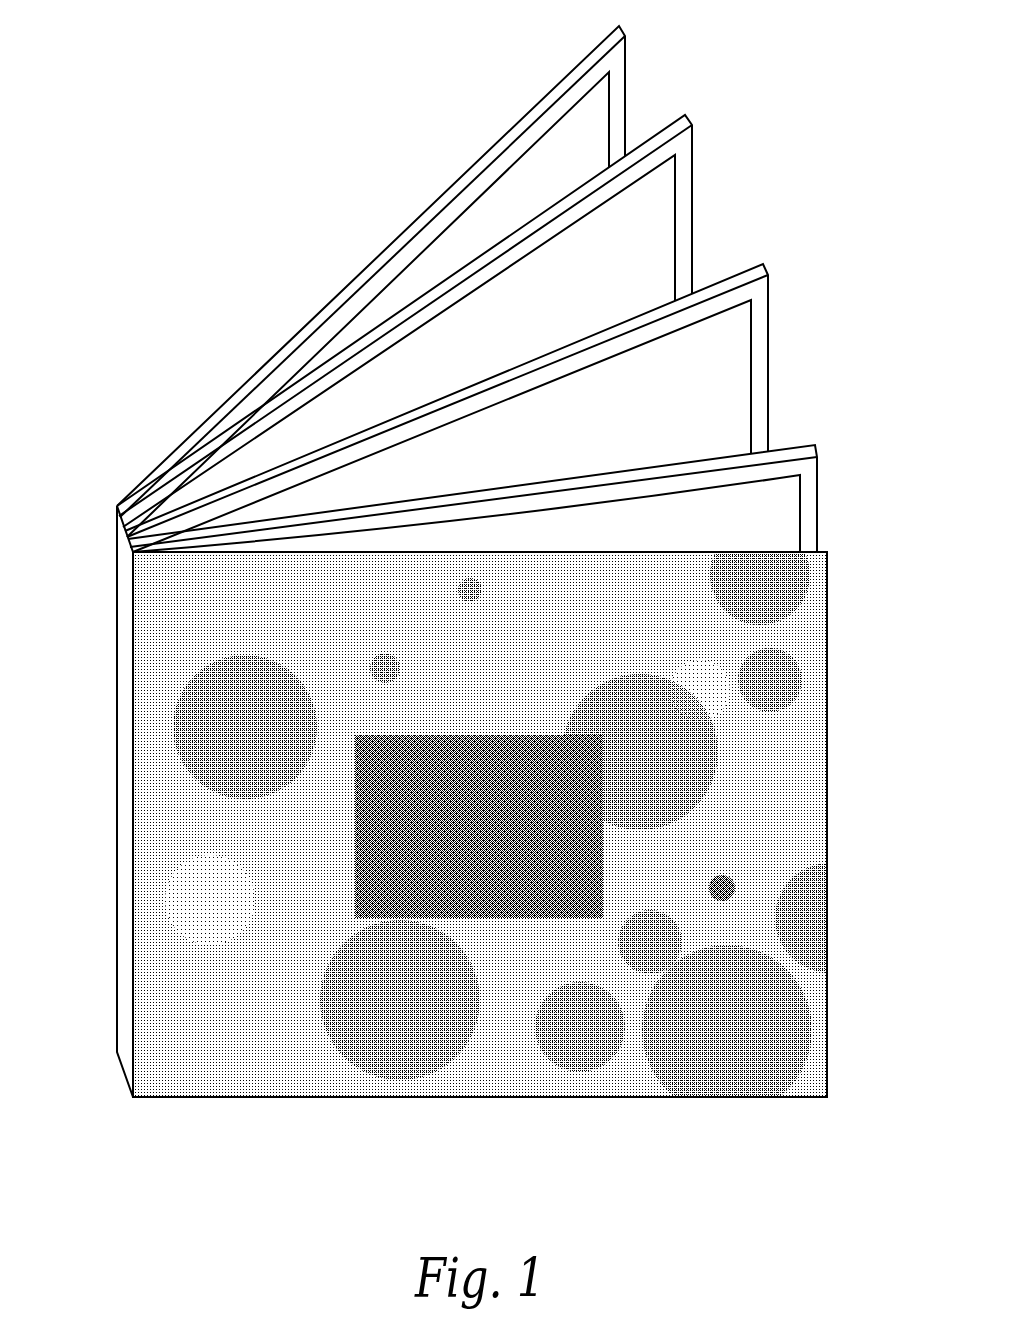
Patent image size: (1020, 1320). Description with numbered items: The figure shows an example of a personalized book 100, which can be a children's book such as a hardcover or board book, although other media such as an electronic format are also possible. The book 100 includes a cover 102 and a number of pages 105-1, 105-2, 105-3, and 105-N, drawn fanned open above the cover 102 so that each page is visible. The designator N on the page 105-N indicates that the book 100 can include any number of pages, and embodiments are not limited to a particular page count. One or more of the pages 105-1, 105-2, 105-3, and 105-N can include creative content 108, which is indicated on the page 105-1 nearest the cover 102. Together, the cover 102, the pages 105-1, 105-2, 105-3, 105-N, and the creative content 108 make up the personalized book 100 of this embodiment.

The personalized book 100 is at (102, 240).
The cover 102 is at (828, 693).
The page 105-1 is at (822, 467).
The page 105-2 is at (770, 283).
The page 105-3 is at (695, 137).
The page 105-N is at (628, 43).
The creative content 108 is at (782, 516).